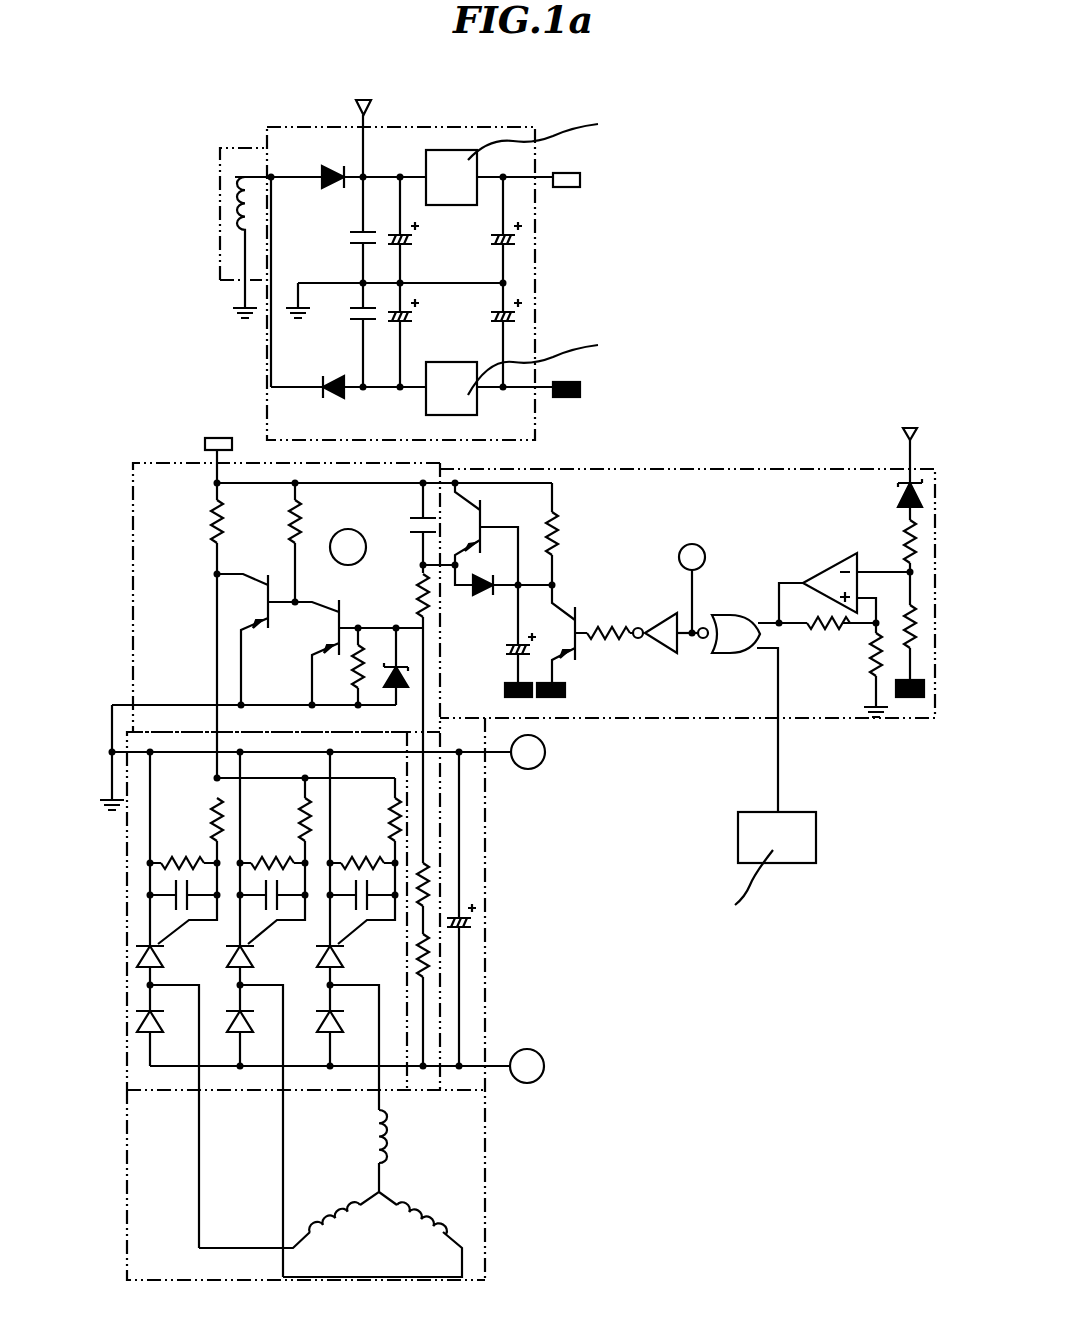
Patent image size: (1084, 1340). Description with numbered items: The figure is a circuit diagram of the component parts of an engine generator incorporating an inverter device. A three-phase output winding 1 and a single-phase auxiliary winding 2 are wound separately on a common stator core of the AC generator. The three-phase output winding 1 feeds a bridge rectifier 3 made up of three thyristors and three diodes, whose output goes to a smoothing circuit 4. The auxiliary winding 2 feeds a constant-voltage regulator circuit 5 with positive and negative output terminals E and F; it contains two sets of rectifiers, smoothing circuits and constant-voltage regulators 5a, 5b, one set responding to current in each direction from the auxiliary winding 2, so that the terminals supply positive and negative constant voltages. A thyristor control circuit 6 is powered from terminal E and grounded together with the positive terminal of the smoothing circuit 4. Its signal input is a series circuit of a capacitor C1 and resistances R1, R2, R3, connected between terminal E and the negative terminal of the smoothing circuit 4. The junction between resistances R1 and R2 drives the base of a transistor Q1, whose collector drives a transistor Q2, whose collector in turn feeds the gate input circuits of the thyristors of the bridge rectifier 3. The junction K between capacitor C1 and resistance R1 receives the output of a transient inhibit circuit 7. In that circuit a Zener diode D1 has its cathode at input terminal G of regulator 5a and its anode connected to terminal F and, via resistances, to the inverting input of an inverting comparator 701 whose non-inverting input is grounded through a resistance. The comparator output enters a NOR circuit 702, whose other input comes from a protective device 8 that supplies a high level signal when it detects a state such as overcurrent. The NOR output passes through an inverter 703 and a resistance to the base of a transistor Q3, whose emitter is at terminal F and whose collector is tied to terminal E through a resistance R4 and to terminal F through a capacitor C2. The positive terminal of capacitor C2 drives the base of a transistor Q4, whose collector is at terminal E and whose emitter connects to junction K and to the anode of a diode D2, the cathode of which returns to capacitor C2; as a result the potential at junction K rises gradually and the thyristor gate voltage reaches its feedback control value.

The three-phase output winding 1 is at (482, 1135).
The single-phase auxiliary winding 2 is at (250, 140).
The bridge rectifier 3 is at (127, 1005).
The smoothing circuit 4 is at (487, 1013).
The constant-voltage regulator circuit 5 is at (412, 127).
The constant-voltage regulator 5a is at (452, 205).
The constant-voltage regulator 5b is at (447, 366).
The thyristor control circuit 6 is at (178, 463).
The transient inhibit circuit 7 is at (605, 467).
The protective device 8 is at (812, 842).
The inverting comparator 701 is at (830, 565).
The NOR circuit 702 is at (748, 655).
The inverter 703 is at (655, 648).
The transistor Q1 is at (356, 652).
The transistor Q2 is at (256, 639).
The transistor Q3 is at (592, 630).
The transistor Q4 is at (489, 534).
The resistance R1 is at (406, 601).
The resistance R2 is at (428, 878).
The resistance R3 is at (428, 956).
The resistance R4 is at (568, 551).
The capacitor C1 is at (408, 528).
The capacitor C2 is at (501, 634).
The Zener diode D1 is at (890, 454).
The diode D2 is at (487, 570).